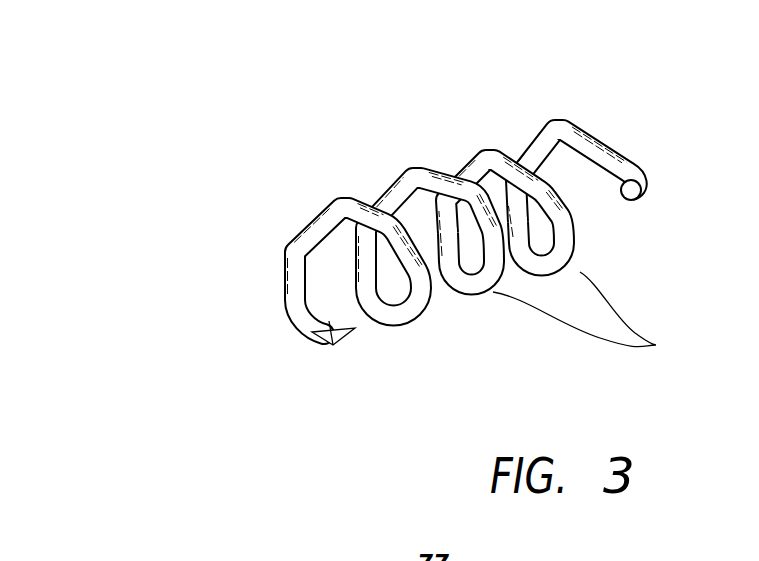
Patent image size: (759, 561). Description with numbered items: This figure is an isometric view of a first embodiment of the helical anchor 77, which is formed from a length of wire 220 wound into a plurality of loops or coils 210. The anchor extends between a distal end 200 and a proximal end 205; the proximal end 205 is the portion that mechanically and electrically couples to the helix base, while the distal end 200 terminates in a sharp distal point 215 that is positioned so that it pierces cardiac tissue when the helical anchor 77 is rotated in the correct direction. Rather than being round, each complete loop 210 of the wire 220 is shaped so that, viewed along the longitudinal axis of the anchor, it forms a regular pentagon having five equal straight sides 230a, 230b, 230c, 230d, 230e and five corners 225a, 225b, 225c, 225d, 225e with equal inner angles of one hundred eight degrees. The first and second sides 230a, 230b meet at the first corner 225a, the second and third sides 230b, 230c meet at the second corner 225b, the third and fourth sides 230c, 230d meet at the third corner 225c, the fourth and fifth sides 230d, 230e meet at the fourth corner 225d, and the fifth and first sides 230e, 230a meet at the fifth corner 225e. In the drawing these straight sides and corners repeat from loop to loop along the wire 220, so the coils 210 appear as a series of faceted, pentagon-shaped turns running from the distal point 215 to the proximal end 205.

The helical anchor 77 is at (442, 237).
The distal end 200 is at (442, 263).
The proximal end 205 is at (442, 263).
The loops or coils 210 is at (603, 318).
The distal point 215 is at (314, 332).
The wire 220 is at (599, 172).
The first corner 225a is at (284, 251).
The second corner 225b is at (340, 195).
The third corner 225c is at (424, 240).
The fourth corner 225d is at (424, 313).
The fifth corner 225e is at (375, 308).
The first side 230a is at (285, 295).
The second side 230b is at (316, 214).
The third side 230c is at (407, 240).
The fourth side 230d is at (440, 292).
The fifth side 230e is at (396, 316).